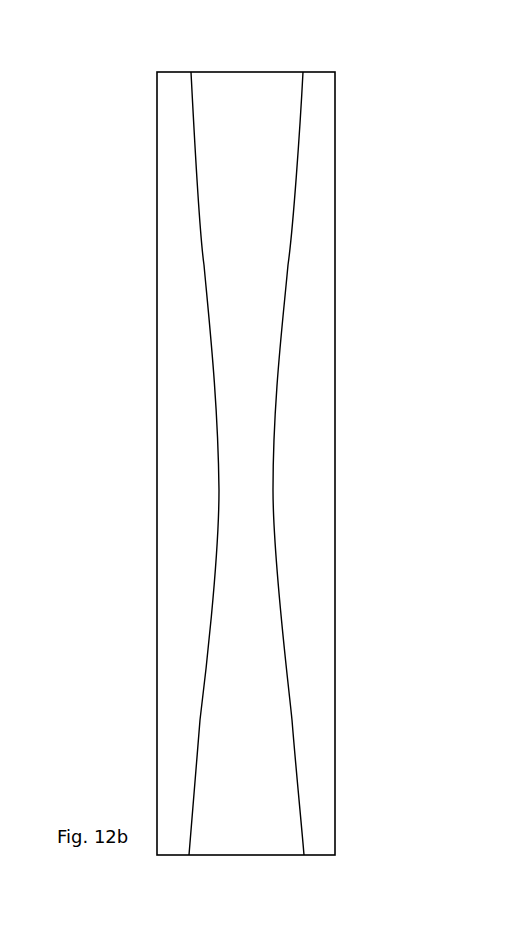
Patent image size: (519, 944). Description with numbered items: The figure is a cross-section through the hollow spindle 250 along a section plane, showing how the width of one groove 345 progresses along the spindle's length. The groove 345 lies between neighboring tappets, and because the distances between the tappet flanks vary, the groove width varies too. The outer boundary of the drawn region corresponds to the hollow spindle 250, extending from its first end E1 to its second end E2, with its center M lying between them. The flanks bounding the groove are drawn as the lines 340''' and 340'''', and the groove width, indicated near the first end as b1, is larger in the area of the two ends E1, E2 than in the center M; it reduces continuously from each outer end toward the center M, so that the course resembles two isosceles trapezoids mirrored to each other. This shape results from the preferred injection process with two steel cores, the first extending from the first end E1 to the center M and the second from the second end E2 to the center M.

The hollow spindle 250 is at (156, 364).
The inner boundary line of cutting region 340''' is at (336, 463).
The inner boundary line of cutting region 340'''' is at (165, 463).
The groove 345 is at (246, 124).
The width b1 is at (287, 167).
The first end E1 is at (339, 73).
The second end E2 is at (339, 853).
The center M is at (339, 472).